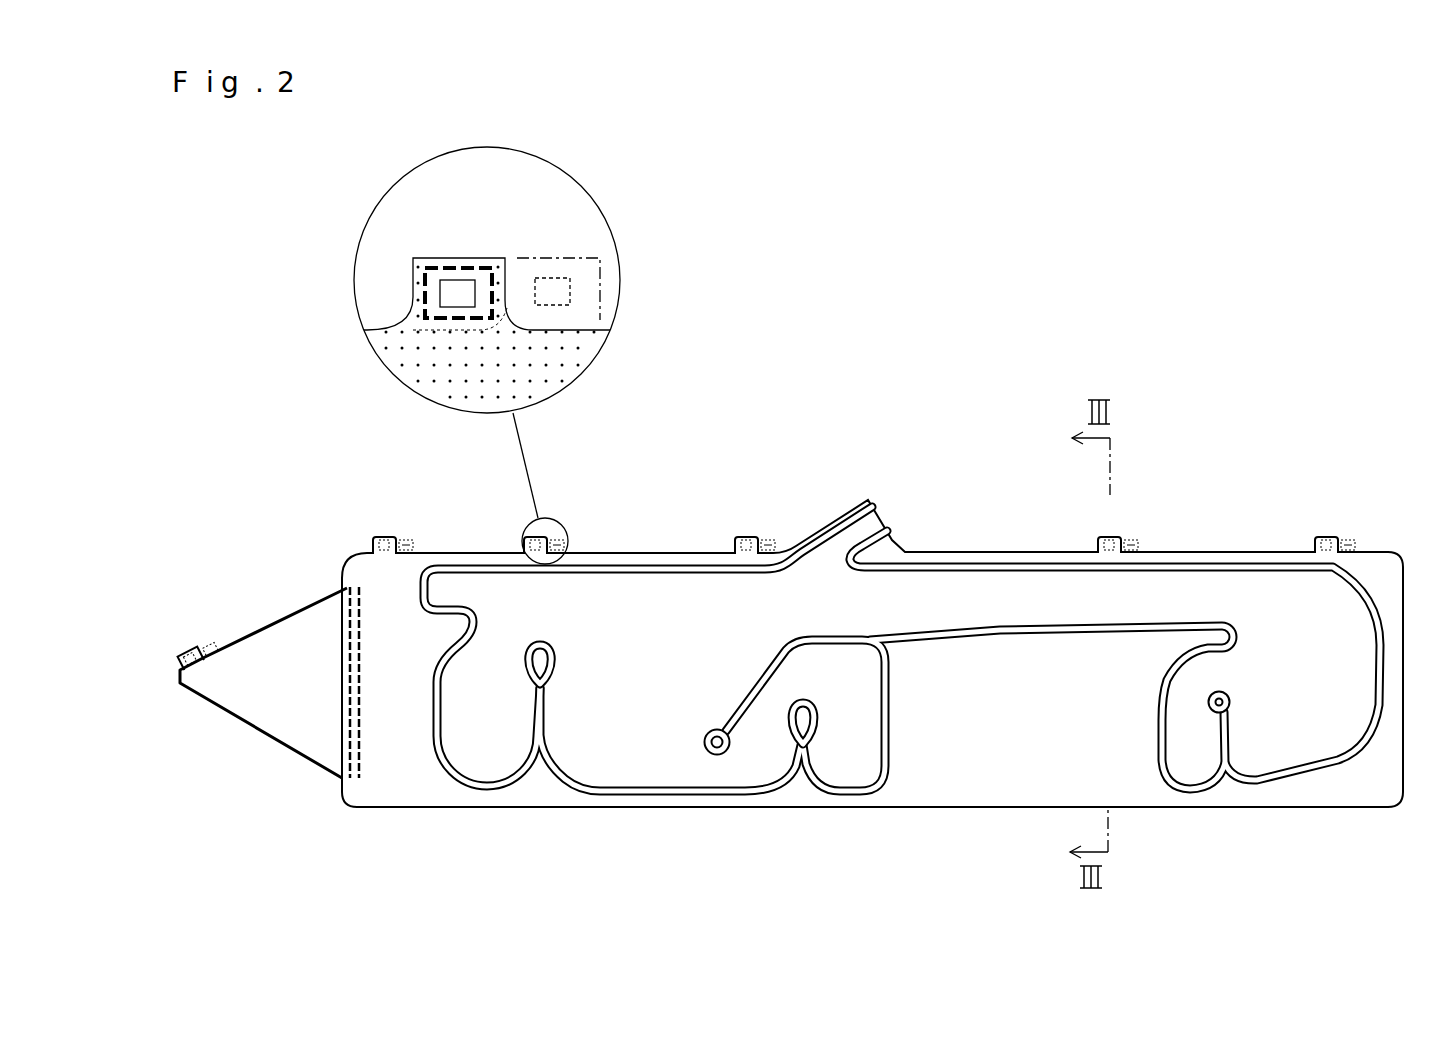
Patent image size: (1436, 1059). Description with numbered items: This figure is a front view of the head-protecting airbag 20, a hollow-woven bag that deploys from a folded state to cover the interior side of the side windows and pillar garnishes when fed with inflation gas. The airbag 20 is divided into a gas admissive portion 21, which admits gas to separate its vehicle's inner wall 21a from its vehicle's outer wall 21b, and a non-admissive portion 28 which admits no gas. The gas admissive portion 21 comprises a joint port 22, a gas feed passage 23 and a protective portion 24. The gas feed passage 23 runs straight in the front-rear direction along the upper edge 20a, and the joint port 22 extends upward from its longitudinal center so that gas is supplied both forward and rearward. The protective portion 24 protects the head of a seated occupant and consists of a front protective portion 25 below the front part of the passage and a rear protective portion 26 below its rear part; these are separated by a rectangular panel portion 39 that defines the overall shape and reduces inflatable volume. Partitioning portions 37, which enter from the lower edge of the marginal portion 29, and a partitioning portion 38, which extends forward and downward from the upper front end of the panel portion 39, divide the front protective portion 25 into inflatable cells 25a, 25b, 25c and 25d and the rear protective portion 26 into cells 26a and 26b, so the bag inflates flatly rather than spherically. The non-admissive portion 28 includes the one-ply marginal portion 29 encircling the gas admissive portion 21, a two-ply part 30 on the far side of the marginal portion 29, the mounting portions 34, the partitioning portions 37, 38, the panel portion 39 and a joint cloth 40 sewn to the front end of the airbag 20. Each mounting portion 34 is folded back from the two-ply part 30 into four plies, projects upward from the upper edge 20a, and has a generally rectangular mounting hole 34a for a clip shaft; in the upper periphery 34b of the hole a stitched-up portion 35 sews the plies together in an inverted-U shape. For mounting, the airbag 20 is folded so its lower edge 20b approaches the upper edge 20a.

The airbag 20 is at (298, 488).
The upper edge 20a is at (963, 552).
The lower edge 20b is at (680, 800).
The gas admissive portion 21 is at (470, 742).
The vehicle's inner wall 21a is at (485, 772).
The vehicle's outer wall 21b is at (483, 758).
The joint port 22 is at (860, 527).
The gas feed passage 23 is at (933, 585).
The protective portion 24 is at (1068, 919).
The front protective portion 25 is at (843, 757).
The inflatable cell 25a is at (525, 762).
The inflatable cell 25b is at (613, 752).
The inflatable cell 25c is at (775, 760).
The inflatable cell 25d is at (842, 708).
The rear protective portion 26 is at (1135, 768).
The inflatable cell 26a is at (1193, 770).
The inflatable cell 26b is at (1293, 742).
The non-admissive portion 28 is at (902, 606).
The marginal portion 29 is at (624, 577).
The two-ply part 30 is at (548, 648).
The mounting portion 34 is at (378, 540).
The mounting hole 34a is at (442, 296).
The upper periphery 34b is at (445, 266).
The stitched-up portion 35 is at (493, 278).
The partitioning portion 37 is at (560, 668).
The partitioning portion 38 is at (795, 652).
The panel portion 39 is at (1000, 775).
The joint cloth 40 is at (263, 713).